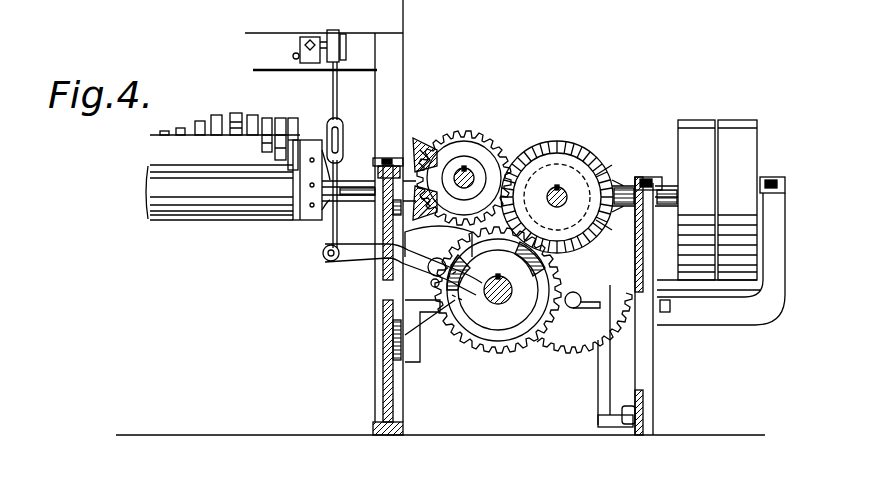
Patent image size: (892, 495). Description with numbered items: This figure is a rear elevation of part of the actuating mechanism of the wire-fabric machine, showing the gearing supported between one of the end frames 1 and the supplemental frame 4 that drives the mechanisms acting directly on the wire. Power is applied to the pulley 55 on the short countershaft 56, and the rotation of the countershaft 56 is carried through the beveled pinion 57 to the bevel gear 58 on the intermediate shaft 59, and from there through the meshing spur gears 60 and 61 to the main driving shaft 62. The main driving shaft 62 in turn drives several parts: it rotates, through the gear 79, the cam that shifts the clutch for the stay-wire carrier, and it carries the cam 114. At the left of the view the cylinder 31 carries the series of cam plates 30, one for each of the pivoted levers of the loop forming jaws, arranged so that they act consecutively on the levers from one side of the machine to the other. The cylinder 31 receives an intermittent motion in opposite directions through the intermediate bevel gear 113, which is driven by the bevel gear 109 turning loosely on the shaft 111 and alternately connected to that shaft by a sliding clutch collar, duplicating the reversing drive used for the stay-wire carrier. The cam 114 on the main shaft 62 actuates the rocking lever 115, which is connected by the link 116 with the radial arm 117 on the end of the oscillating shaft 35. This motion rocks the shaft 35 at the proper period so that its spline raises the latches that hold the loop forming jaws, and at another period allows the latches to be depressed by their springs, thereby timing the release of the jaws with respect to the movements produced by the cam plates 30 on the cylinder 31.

The end frame 1 is at (405, 78).
The supplemental frame 4 is at (652, 347).
The cam plate 30 is at (289, 118).
The cylinder 31 is at (258, 222).
The oscillating shaft 35 is at (300, 37).
The pulley 55 is at (703, 130).
The countershaft 56 is at (666, 188).
The beveled pinion 57 is at (614, 178).
The bevel gear 58 is at (569, 145).
The intermediate shaft 59 is at (562, 204).
The spur gear 60 is at (598, 152).
The spur gear 61 is at (568, 283).
The main driving shaft 62 is at (497, 305).
The gear 79 is at (595, 343).
The bevel gear 109 is at (494, 145).
The shaft 111 is at (464, 170).
The intermediate bevel gear 113 is at (420, 138).
The cam 114 is at (517, 330).
The rocking lever 115 is at (355, 253).
The link 116 is at (339, 104).
The radial arm 117 is at (343, 34).